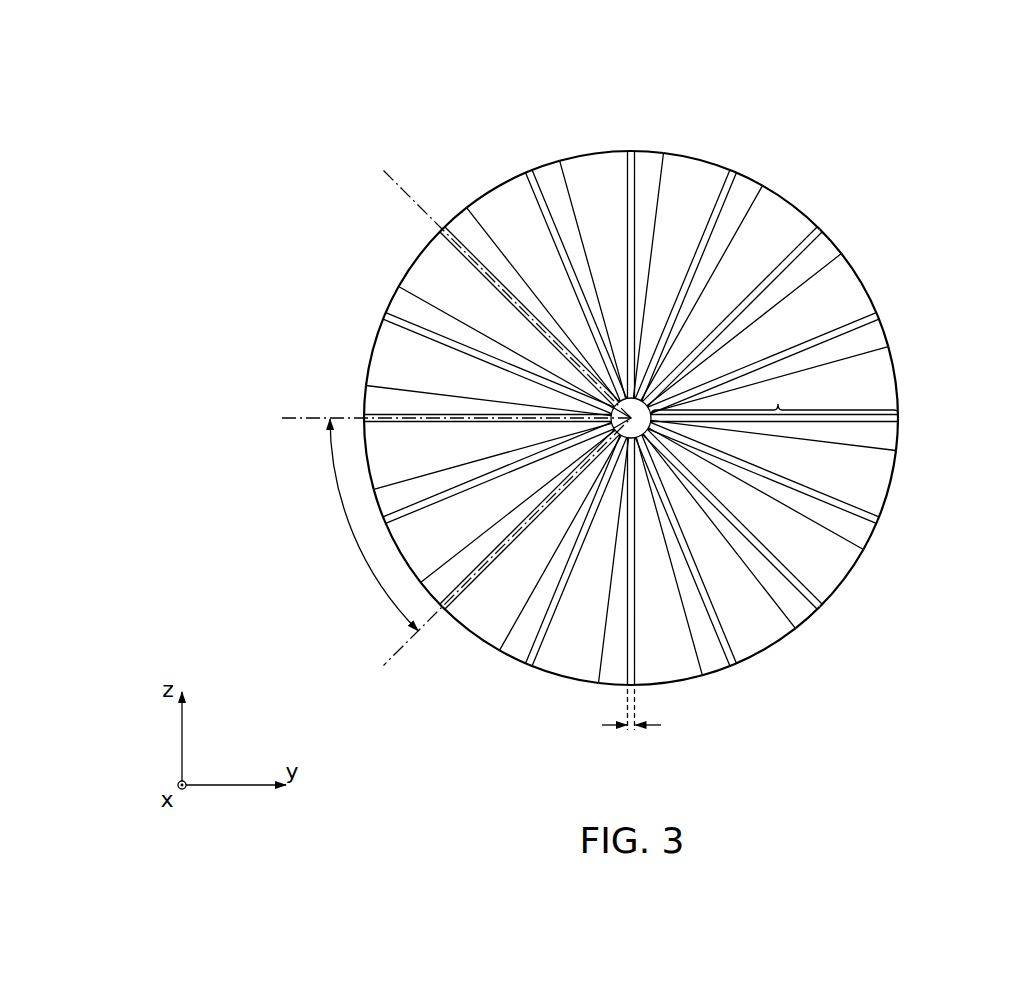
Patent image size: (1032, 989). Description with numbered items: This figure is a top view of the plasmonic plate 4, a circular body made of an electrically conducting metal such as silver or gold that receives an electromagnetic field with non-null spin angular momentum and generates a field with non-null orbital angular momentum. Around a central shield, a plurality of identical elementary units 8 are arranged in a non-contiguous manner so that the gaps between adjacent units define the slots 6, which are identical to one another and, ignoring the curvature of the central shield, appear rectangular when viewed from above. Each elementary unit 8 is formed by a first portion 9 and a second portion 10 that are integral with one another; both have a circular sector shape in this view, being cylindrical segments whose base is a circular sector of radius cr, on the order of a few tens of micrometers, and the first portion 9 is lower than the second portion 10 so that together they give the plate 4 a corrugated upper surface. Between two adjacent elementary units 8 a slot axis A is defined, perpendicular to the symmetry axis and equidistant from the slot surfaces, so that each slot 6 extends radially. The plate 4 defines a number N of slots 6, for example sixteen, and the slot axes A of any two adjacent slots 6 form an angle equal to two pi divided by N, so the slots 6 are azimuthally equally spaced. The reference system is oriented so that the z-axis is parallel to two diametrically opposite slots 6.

The plate 4 is at (873, 125).
The slots 6 is at (632, 149).
The elementary units 8 is at (573, 146).
The first portion 9 is at (883, 485).
The second portion 10 is at (887, 435).
The radius of circular sector cr is at (775, 396).
The slot gap width g is at (631, 720).
The slot axis A is at (393, 178).
The number of slots N is at (320, 555).